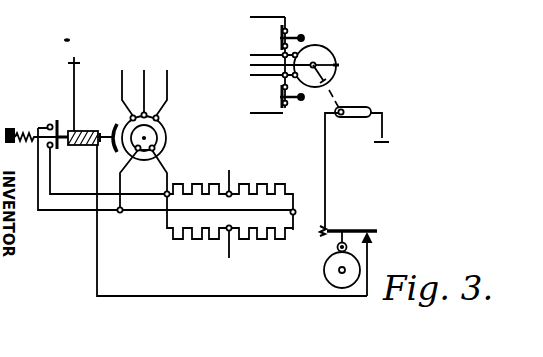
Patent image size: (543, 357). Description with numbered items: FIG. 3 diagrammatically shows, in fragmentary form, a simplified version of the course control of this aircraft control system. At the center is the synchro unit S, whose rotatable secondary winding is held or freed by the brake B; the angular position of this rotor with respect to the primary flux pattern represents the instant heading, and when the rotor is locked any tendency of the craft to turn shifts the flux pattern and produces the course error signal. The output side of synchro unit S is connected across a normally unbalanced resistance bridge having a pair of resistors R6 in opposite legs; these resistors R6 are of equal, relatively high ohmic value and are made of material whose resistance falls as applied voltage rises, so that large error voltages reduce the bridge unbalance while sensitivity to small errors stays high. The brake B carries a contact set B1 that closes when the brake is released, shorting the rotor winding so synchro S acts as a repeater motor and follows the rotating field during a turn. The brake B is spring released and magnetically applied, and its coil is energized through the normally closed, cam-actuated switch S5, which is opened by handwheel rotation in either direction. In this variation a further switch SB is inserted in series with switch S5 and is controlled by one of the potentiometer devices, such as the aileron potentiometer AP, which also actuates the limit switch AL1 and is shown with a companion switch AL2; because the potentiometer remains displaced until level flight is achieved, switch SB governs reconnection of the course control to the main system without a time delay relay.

The contact set B1 is at (58, 122).
The brake B is at (94, 126).
The synchro unit S is at (168, 140).
The resistors R6 is at (274, 179).
The upper clamp terminal AL2 is at (280, 38).
The limit switch AL1 is at (280, 97).
The aileron potentiometer AP is at (327, 47).
The switch SB is at (367, 103).
The switch S5 is at (371, 228).